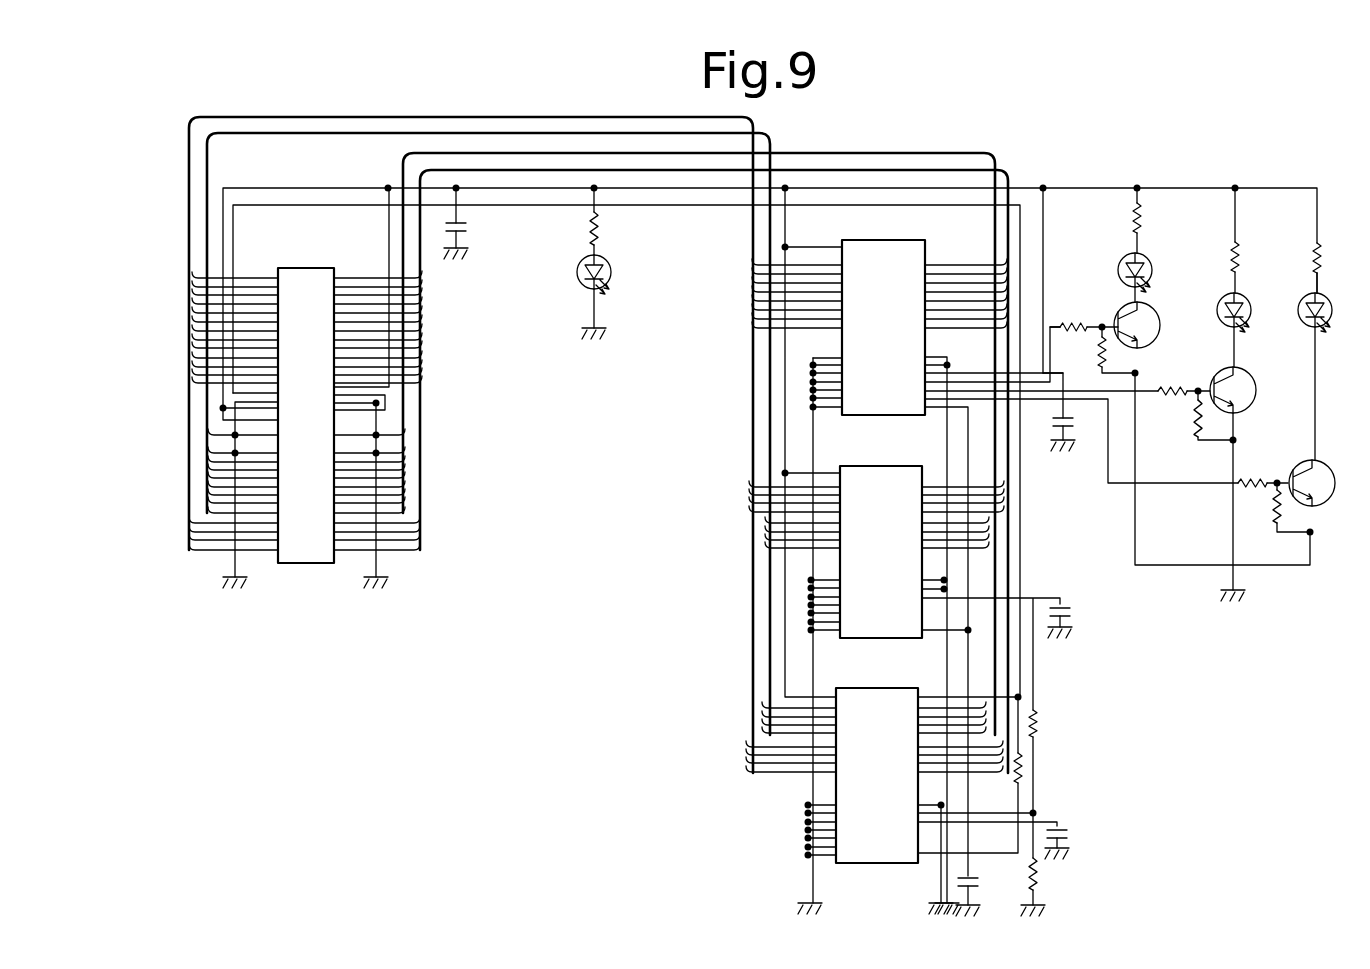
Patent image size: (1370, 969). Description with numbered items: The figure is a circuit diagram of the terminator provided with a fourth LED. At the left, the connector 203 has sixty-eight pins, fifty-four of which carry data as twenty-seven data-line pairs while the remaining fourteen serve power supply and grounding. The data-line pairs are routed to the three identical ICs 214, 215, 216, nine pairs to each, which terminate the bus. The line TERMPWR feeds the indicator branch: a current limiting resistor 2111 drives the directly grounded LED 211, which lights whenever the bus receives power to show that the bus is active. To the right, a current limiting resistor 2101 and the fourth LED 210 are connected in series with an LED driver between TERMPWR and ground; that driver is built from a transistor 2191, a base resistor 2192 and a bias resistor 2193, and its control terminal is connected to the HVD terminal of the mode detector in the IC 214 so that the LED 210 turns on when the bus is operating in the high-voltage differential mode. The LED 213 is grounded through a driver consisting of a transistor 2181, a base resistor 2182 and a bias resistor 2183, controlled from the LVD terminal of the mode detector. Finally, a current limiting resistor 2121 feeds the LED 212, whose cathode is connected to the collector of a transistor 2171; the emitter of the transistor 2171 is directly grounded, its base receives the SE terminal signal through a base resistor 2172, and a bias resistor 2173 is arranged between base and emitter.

The connector 203 is at (318, 268).
The current limiting resistor 2111 is at (615, 228).
The LED 211 is at (621, 274).
The IC 214 is at (912, 240).
The IC 215 is at (880, 468).
The IC 216 is at (877, 691).
The current limiting resistor 2101 is at (1130, 221).
The fourth LED 210 is at (1137, 251).
The transistor 2191 is at (1140, 308).
The base resistor 2192 is at (1074, 320).
The bias resistor 2193 is at (1122, 354).
The LED 213 is at (1224, 296).
The transistor 2181 is at (1253, 377).
The base resistor 2182 is at (1172, 399).
The bias resistor 2183 is at (1204, 438).
The current limiting resistor 2121 is at (1314, 241).
The LED 212 is at (1300, 303).
The transistor 2171 is at (1300, 458).
The base resistor 2172 is at (1261, 478).
The bias resistor 2173 is at (1273, 526).